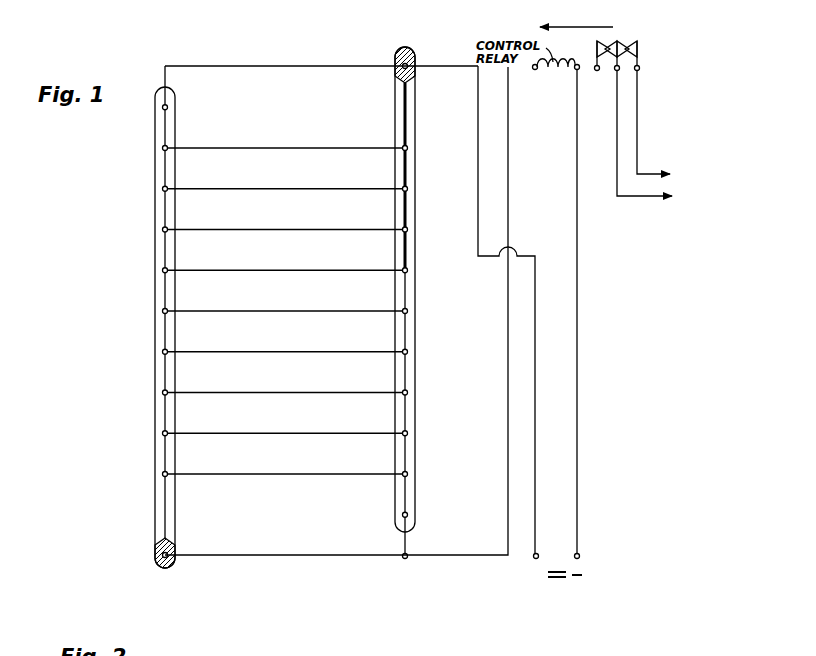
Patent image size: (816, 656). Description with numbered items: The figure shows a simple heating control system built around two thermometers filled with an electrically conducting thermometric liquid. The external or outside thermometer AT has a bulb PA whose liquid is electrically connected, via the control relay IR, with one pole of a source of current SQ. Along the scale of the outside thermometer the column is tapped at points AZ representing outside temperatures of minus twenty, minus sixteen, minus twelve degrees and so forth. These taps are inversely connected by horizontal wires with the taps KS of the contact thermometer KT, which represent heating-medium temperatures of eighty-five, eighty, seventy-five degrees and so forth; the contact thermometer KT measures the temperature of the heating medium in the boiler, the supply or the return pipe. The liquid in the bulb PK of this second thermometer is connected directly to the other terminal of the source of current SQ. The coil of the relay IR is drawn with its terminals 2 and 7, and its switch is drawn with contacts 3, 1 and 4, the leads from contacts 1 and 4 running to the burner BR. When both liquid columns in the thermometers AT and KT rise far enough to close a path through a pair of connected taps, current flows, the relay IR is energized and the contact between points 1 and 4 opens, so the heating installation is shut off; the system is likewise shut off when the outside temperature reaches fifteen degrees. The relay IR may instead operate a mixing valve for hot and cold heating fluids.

The external thermometer AT is at (162, 297).
The contact thermometer KT is at (407, 293).
The bulb of contact thermometer PK is at (389, 64).
The thermometer bulb PA is at (151, 553).
The taps KS is at (408, 325).
The taps AZ is at (246, 290).
The control relay IR is at (576, 17).
The burner BR is at (690, 189).
The source of current SQ is at (555, 584).
The contact 1 is at (638, 118).
The relay terminal 2 is at (553, 74).
The switch contact 3 is at (601, 65).
The contact 4 is at (647, 107).
The relay terminal 7 is at (575, 77).